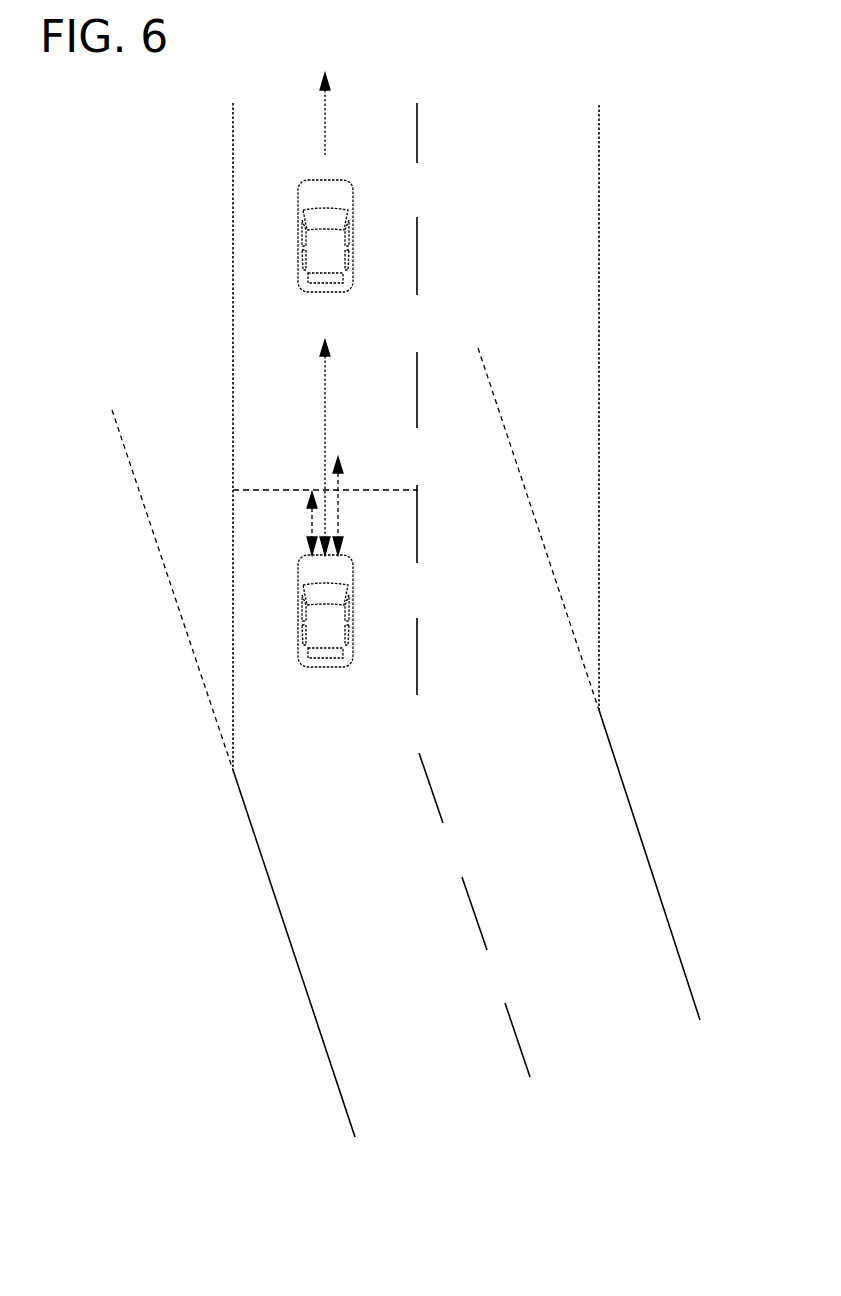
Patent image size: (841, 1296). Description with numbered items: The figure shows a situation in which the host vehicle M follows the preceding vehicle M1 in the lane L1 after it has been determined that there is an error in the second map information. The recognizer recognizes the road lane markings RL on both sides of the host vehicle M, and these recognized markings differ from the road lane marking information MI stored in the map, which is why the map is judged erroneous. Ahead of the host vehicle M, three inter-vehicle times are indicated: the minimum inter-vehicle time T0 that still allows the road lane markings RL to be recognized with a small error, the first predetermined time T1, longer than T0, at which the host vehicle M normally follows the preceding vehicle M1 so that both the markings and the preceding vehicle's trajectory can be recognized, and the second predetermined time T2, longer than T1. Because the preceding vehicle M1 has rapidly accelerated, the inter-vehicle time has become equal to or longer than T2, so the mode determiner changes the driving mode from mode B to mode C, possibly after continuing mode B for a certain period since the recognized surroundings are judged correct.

The host vehicle M is at (325, 668).
The preceding vehicle M1 is at (353, 236).
The minimum inter-vehicle time T0 is at (310, 519).
The first predetermined time T1 is at (340, 512).
The second predetermined time T2 is at (327, 415).
The road lane marking information MI is at (162, 563).
The road lane markings RL is at (319, 1033).
The lane L1 is at (450, 1093).